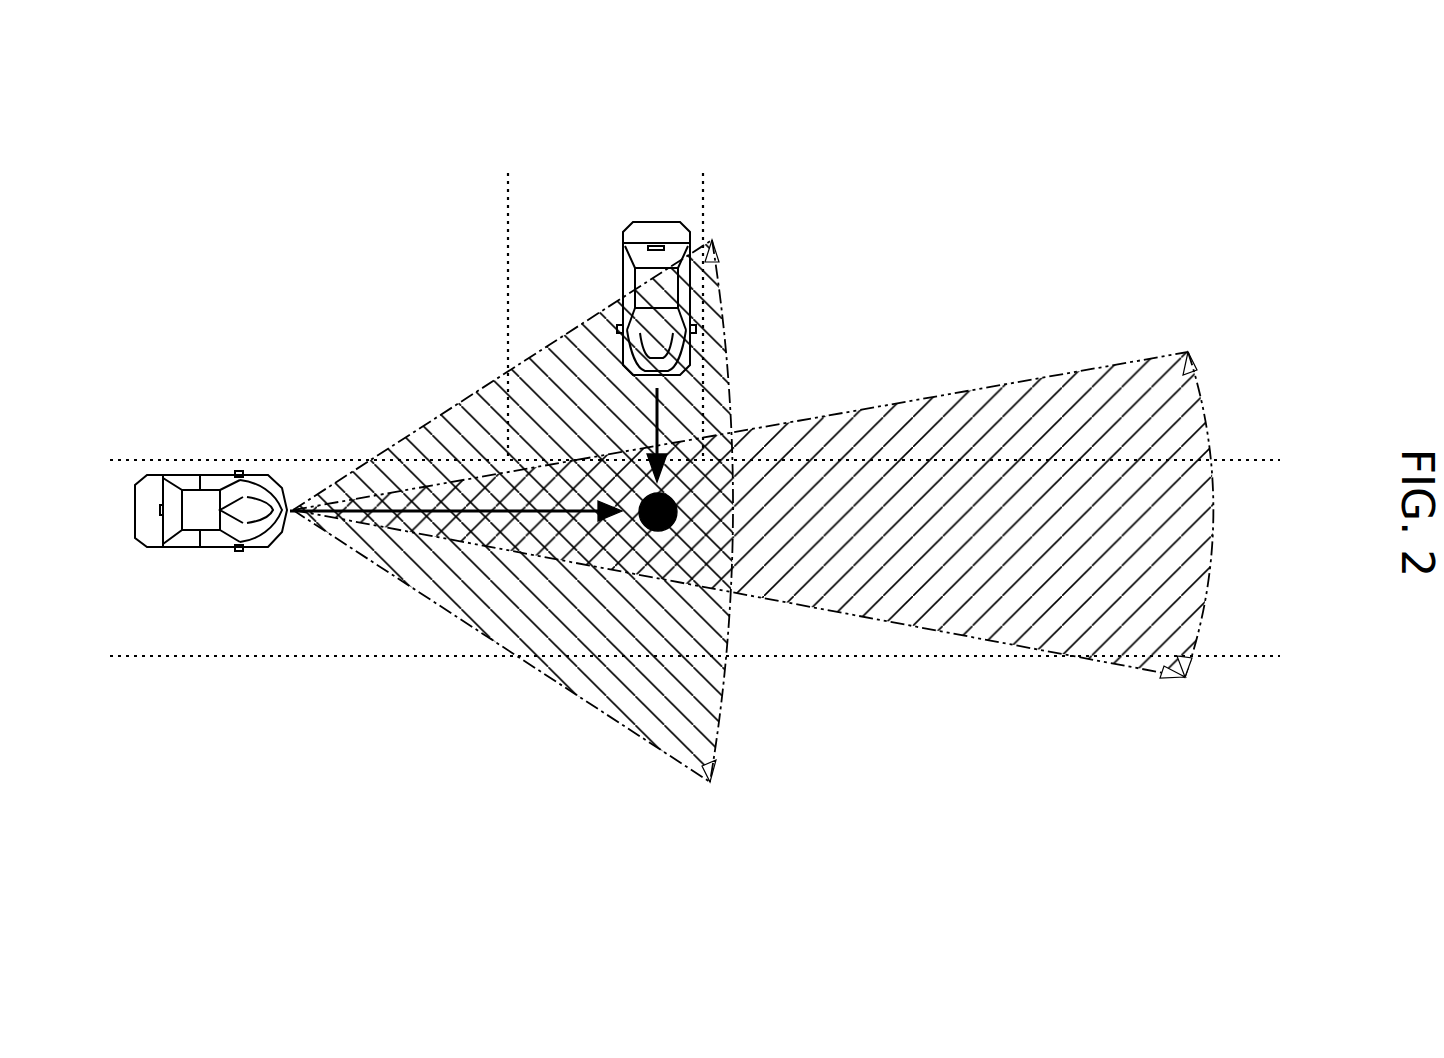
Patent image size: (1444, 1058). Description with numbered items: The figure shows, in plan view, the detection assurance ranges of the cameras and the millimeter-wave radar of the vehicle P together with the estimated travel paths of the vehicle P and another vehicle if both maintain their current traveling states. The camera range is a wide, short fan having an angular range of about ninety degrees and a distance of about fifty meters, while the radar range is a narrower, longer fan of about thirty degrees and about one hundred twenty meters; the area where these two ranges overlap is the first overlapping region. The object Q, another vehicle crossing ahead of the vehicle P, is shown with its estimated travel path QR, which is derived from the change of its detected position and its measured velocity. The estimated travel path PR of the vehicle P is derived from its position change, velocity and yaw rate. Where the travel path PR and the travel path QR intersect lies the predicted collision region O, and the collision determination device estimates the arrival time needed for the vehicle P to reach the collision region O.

The vehicle P is at (188, 474).
The object (other vehicle) Q is at (657, 235).
The predicted collision region O is at (613, 453).
The estimated travel path of the vehicle PR is at (450, 507).
The estimated travel path of the object QR is at (660, 417).